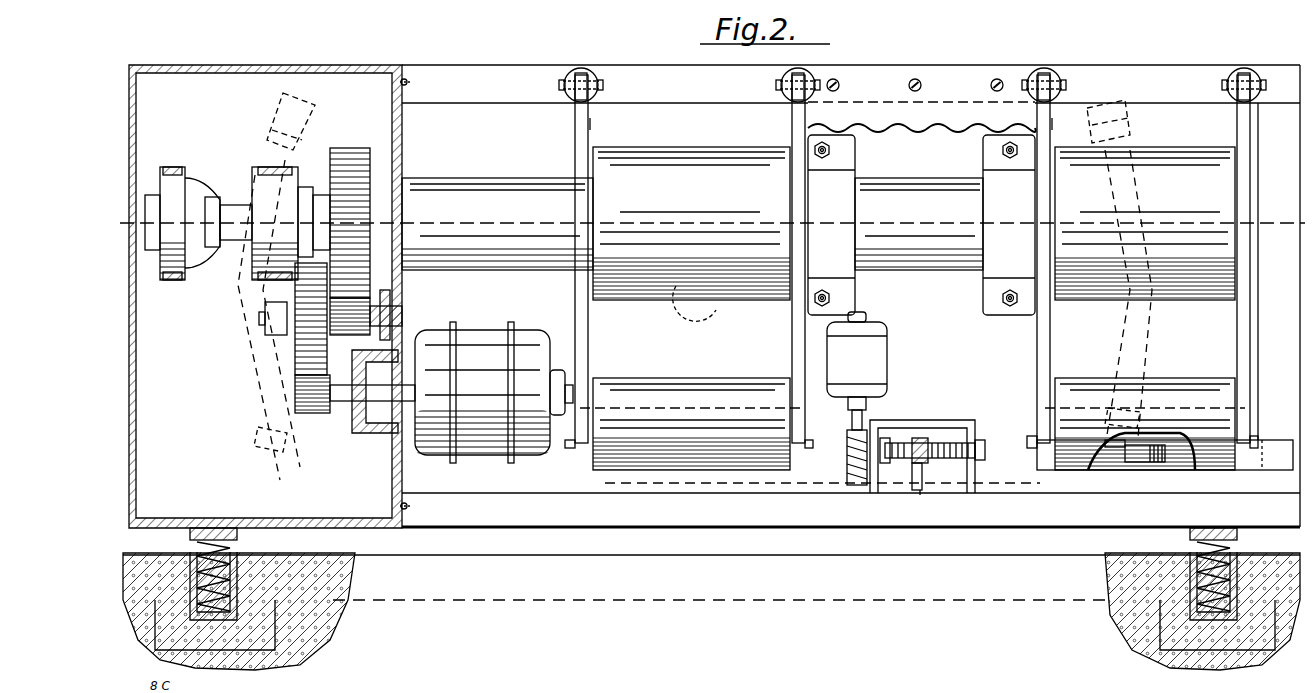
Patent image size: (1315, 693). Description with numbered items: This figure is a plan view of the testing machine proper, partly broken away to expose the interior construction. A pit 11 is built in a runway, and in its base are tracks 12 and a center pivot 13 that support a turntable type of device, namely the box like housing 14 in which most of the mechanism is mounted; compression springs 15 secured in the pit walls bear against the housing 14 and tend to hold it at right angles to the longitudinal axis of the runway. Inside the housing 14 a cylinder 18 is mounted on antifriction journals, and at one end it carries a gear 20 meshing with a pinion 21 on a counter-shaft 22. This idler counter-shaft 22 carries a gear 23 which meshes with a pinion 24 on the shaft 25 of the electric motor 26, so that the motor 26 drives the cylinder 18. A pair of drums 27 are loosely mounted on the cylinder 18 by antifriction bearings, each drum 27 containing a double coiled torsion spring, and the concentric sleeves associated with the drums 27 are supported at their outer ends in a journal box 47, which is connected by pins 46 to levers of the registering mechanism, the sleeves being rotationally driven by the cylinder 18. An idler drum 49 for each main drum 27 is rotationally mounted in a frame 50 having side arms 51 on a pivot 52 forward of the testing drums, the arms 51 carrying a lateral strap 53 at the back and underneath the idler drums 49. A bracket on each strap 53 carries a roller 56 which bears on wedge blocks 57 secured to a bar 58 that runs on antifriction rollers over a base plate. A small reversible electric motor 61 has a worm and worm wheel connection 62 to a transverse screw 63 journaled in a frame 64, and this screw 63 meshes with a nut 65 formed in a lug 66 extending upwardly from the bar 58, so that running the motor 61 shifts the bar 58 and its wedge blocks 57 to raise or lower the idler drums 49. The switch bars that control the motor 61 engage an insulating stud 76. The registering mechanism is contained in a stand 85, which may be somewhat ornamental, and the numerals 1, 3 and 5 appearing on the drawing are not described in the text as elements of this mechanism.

The shaft 1 is at (280, 221).
The section line 3 is at (120, 216).
The bed plate 5 is at (627, 490).
The pit 11 is at (405, 540).
The tracks 12 is at (252, 421).
The center pivot 13 is at (706, 312).
The box like housing 14 is at (448, 118).
The compression springs 15 is at (240, 540).
The cylinder 18 is at (452, 187).
The gear 20 is at (346, 156).
The pinion 21 is at (346, 336).
The counter-shaft 22 is at (400, 296).
The gear 23 is at (296, 336).
The pinion 24 is at (321, 413).
The shaft 25 is at (362, 436).
The electric motor 26 is at (472, 340).
The drums 27 is at (690, 172).
The pins 46 is at (272, 168).
The journal box 47 is at (172, 208).
The idler drum 49 is at (612, 389).
The frame 50 is at (620, 118).
The side arms 51 is at (577, 316).
The pivot 52 is at (577, 80).
The lateral strap 53 is at (1172, 472).
The roller 56 is at (1157, 466).
The wedge blocks 57 is at (1103, 462).
The bar 58 is at (986, 452).
The small electric motor 61 is at (880, 364).
The worm and worm wheel connection 62 is at (845, 450).
The transverse screw 63 is at (899, 445).
The frame 64 is at (972, 426).
The nut 65 is at (926, 447).
The lug 66 is at (920, 470).
The insulating stud 76 is at (908, 490).
The stand 85 is at (140, 518).